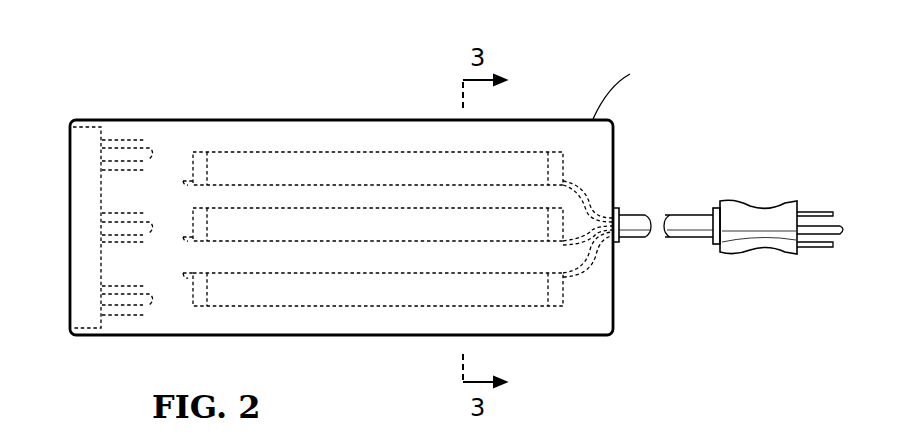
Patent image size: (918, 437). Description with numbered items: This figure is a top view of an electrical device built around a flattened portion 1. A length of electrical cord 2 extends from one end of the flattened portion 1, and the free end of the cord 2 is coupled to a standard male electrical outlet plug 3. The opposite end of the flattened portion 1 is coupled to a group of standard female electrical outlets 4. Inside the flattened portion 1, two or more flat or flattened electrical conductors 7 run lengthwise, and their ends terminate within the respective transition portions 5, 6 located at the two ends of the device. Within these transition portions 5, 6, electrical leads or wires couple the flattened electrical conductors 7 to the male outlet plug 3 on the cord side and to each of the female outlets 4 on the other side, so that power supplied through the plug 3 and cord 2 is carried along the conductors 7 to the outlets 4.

The flattened portion 1 is at (361, 112).
The electrical cord 2 is at (633, 225).
The male electrical outlet plug 3 is at (763, 210).
The female electrical outlets 4 is at (63, 157).
The transition portion 5 is at (619, 90).
The transition portion 6 is at (160, 119).
The flattened electrical conductors 7 is at (263, 226).